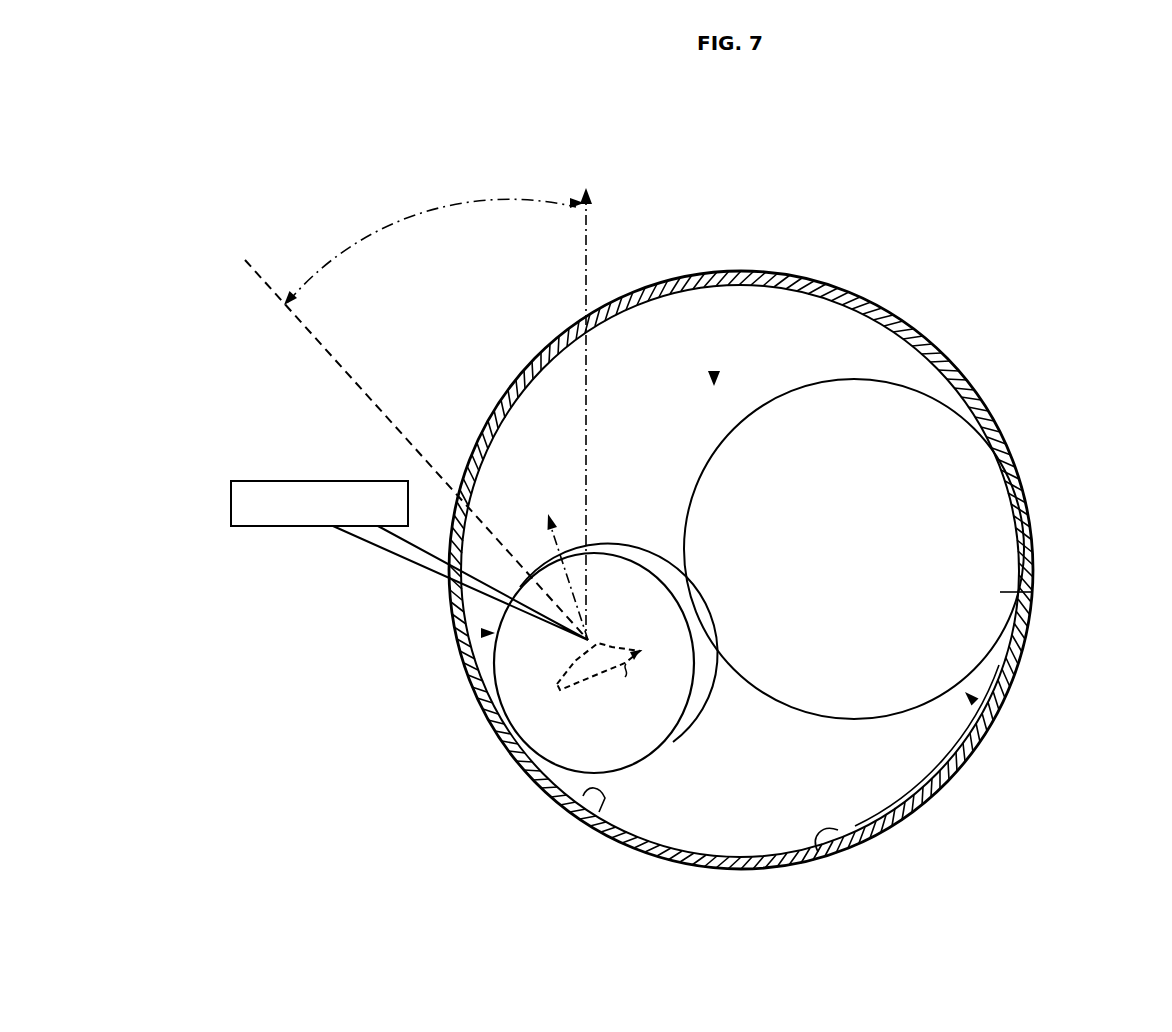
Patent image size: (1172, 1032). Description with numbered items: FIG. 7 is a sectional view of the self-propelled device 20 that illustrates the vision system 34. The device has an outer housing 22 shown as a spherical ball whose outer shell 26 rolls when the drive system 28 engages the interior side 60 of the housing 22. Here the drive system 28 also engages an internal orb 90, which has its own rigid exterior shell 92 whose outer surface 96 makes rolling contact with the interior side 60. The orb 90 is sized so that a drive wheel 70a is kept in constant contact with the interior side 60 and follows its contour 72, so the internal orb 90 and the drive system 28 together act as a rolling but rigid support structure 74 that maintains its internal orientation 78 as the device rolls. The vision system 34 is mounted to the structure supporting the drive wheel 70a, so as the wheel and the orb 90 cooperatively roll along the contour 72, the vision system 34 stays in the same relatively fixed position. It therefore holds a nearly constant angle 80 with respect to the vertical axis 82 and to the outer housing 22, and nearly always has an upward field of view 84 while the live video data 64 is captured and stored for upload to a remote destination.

The self-propelled device 20 is at (955, 365).
The housing 22 is at (992, 417).
The outer shell 26 is at (945, 780).
The drive system 28 is at (482, 633).
The vision system 34 is at (605, 686).
The interior side 60 is at (583, 796).
The live video data 64 is at (231, 498).
The drive wheel 70a is at (655, 758).
The contour 72 is at (818, 852).
The rigid support structure 74 is at (715, 376).
The internal orientation 78 is at (538, 490).
The angle 80 is at (573, 525).
The vertical axis 82 is at (627, 196).
The upward field of view 84 is at (425, 212).
The internal orb 90 is at (1022, 592).
The rigid exterior shell 92 is at (971, 698).
The outer surface 96 is at (827, 409).